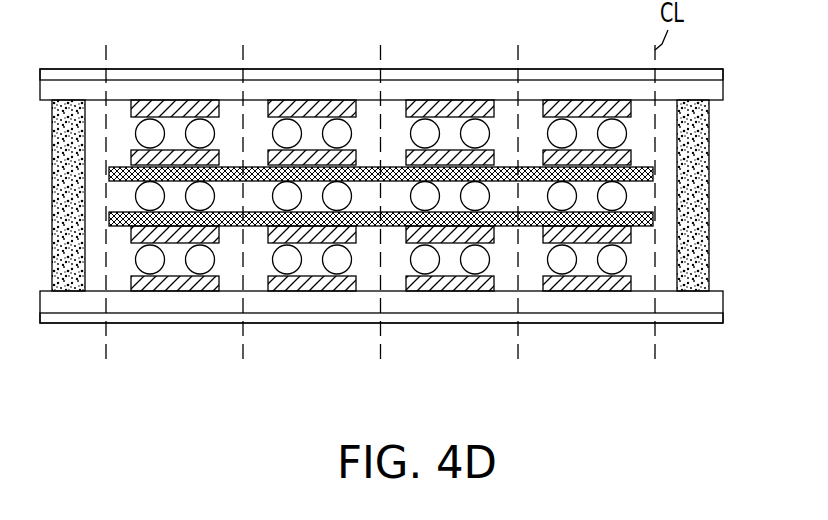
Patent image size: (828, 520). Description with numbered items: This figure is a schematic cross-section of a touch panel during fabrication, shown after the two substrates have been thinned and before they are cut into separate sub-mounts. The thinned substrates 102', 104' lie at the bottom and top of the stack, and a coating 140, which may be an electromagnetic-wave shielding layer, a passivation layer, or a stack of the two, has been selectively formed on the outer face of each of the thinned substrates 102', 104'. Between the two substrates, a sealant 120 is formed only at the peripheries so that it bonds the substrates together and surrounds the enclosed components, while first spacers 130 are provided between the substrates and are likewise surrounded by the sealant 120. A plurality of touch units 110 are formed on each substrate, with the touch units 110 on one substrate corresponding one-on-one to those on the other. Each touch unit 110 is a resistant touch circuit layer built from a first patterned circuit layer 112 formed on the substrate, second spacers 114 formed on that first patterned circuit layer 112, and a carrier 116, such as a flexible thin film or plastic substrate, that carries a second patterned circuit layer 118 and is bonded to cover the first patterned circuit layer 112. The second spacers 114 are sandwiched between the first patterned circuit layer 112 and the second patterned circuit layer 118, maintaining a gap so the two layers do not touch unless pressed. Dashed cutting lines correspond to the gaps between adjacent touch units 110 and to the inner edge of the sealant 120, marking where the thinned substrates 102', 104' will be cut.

The coating 140 is at (723, 74).
The thinned substrate 104' is at (425, 82).
The thinned substrate 102' is at (426, 305).
The sealant 120 is at (703, 121).
The first spacers 130 is at (617, 197).
The touch unit 110 is at (463, 195).
The carrier 116 is at (655, 221).
The second patterned circuit layer 118 is at (631, 237).
The second spacers 114 is at (618, 258).
The first patterned circuit layer 112 is at (767, 173).